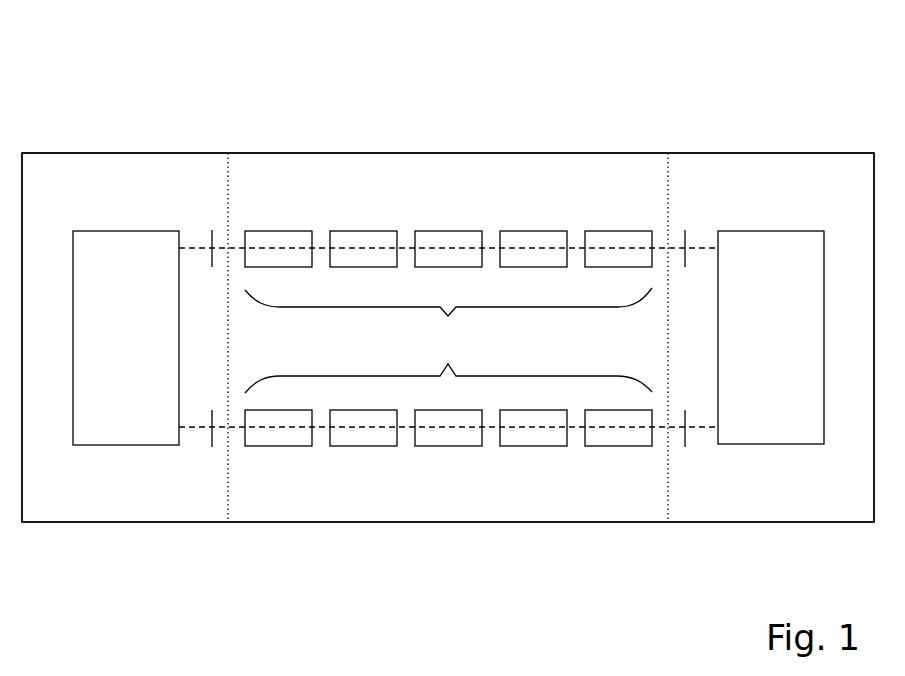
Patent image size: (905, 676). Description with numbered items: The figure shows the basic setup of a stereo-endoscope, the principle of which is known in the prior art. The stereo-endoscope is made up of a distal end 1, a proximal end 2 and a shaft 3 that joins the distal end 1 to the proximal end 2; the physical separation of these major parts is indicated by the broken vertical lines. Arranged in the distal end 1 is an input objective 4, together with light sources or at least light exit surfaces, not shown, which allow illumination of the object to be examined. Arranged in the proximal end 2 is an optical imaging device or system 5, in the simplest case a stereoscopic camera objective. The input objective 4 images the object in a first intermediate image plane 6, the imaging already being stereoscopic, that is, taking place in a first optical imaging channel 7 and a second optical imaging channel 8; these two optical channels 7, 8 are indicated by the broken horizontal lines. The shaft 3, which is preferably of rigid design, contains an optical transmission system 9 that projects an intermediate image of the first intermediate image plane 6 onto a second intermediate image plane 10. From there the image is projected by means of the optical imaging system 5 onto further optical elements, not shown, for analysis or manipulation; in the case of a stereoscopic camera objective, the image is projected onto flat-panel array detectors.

The distal end 1 is at (103, 192).
The proximal end 2 is at (782, 195).
The shaft 3 is at (285, 153).
The input objective 4 is at (126, 338).
The optical imaging device or system 5 is at (771, 337).
The first intermediate image plane 6 is at (210, 432).
The first optical imaging channel 7 is at (490, 430).
The second optical imaging channel 8 is at (490, 247).
The optical transmission system 9 is at (448, 337).
The second intermediate image plane 10 is at (685, 232).